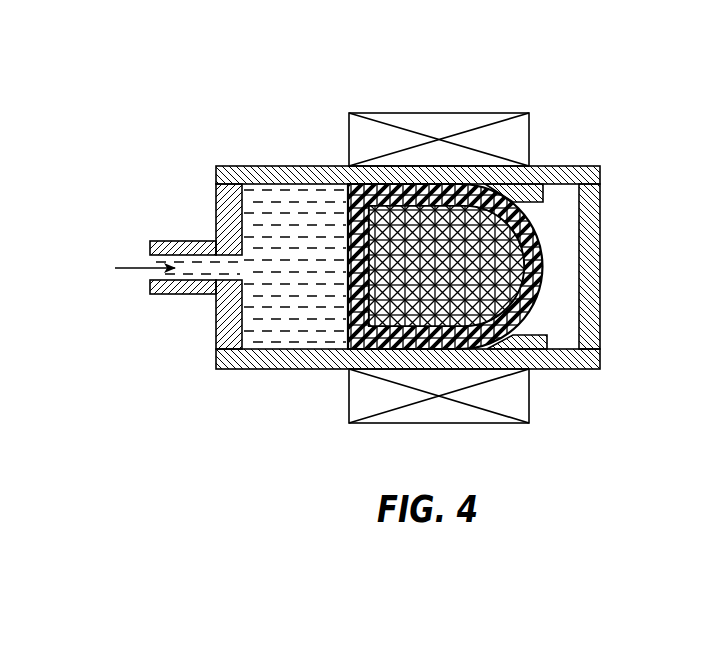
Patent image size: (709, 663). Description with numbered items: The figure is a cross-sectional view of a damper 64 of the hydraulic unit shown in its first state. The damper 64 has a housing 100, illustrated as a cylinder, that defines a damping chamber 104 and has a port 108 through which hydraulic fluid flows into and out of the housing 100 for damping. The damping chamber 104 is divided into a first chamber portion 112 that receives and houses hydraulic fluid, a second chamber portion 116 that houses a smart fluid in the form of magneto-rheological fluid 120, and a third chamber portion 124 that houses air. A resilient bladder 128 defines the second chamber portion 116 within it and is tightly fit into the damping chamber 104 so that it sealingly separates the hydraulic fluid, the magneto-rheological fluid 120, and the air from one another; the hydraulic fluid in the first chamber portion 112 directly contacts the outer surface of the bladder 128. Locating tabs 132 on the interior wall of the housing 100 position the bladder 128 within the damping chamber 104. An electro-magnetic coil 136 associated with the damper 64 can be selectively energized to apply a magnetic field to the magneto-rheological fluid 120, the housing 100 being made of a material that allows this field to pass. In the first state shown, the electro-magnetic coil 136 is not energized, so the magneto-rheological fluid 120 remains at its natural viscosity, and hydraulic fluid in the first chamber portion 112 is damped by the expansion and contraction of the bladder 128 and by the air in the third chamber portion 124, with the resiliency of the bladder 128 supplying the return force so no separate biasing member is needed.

The damper 64 is at (214, 106).
The housing 100 is at (216, 361).
The damping chamber 104 is at (329, 230).
The port 108 is at (148, 259).
The first chamber portion 112 is at (267, 222).
The second chamber portion 116 is at (408, 240).
The magneto-rheological fluid 120 is at (460, 228).
The third chamber portion 124 is at (557, 265).
The resilient bladder 128 is at (350, 330).
The locating tab 132 is at (541, 340).
The electro-magnetic coil 136 is at (475, 112).